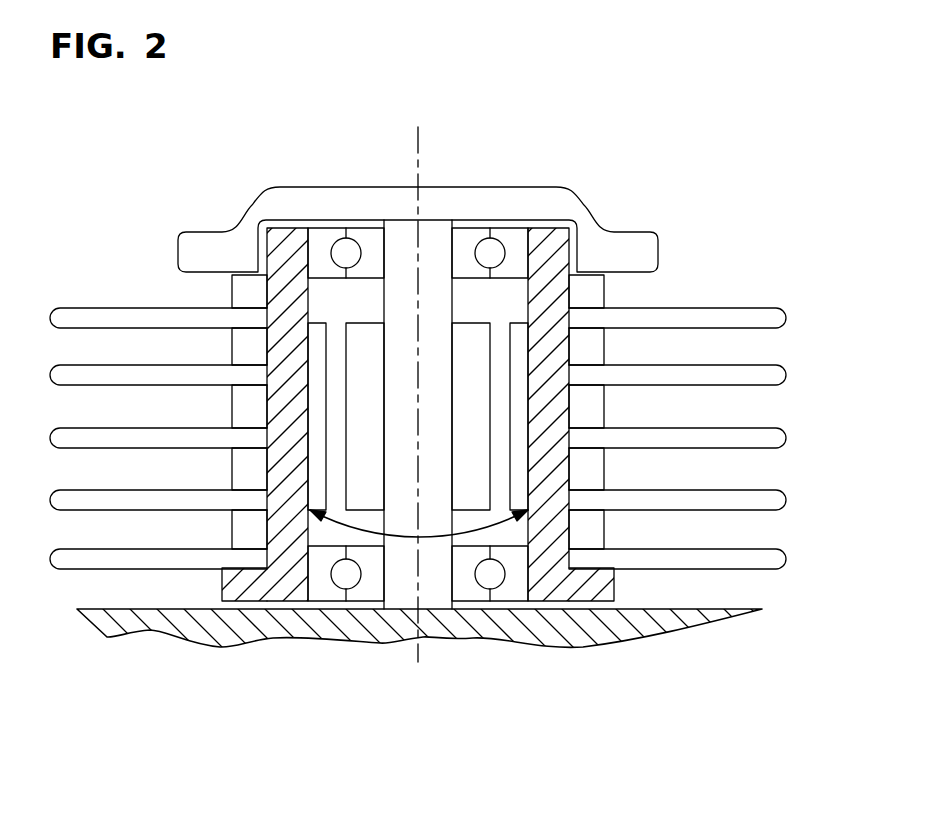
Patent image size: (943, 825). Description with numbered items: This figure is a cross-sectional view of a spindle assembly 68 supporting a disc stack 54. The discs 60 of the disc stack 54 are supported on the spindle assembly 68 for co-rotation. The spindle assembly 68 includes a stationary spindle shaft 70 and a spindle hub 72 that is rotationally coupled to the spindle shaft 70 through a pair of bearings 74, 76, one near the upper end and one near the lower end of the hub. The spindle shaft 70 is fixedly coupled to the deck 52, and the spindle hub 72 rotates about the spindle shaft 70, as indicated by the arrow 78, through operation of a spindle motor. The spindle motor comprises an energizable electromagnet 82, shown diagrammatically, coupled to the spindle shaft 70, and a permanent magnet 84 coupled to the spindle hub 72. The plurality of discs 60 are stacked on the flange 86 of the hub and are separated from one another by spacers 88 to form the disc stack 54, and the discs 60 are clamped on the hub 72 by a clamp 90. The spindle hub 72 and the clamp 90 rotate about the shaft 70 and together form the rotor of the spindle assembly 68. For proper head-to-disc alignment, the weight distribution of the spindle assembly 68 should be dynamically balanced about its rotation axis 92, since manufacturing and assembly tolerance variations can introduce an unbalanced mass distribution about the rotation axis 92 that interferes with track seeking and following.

The deck 52 is at (438, 623).
The disc stack 54 is at (768, 300).
The discs 60 is at (787, 316).
The spindle assembly 68 is at (557, 184).
The spindle shaft 70 is at (430, 240).
The spindle hub 72 is at (277, 247).
The bearing 74 is at (327, 233).
The bearing 76 is at (322, 594).
The arrow 78 is at (362, 527).
The energizable electromagnet 82 is at (418, 416).
The permanent magnet 84 is at (318, 345).
The flange 86 is at (620, 580).
The spacers 88 is at (605, 285).
The clamp 90 is at (497, 188).
The rotation axis 92 is at (418, 137).